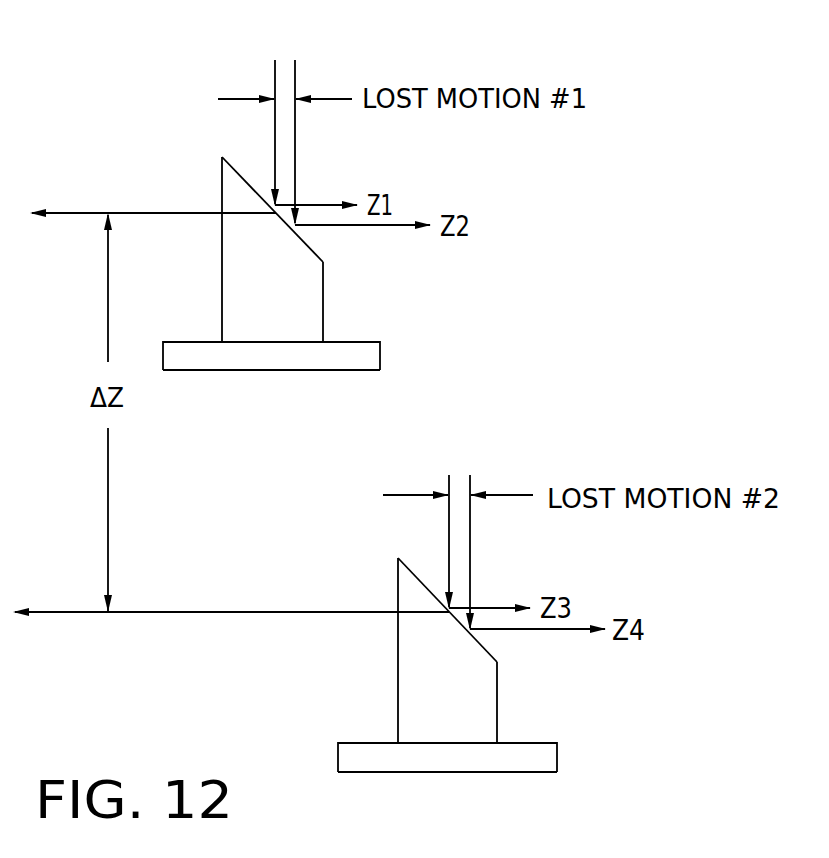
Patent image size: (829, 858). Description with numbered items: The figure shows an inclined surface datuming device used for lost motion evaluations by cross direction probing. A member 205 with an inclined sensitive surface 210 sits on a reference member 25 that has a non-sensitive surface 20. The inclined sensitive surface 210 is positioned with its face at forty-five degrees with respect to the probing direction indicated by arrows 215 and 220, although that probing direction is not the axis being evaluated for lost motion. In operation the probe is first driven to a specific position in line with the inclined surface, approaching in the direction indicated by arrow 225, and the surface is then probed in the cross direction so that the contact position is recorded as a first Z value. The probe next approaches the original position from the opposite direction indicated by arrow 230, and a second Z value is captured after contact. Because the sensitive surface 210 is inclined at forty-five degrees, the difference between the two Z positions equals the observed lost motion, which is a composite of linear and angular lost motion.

The non-sensitive surface 20 is at (380, 356).
The reference member 25 is at (355, 360).
The member 205 is at (299, 308).
The inclined sensitive surface 210 is at (240, 176).
The arrow indicating probing direction 215 is at (275, 70).
The arrow indicating probing direction 220 is at (295, 70).
The arrow indicating direction of approach 225 is at (232, 99).
The arrow indicating opposite direction of approach 230 is at (352, 99).